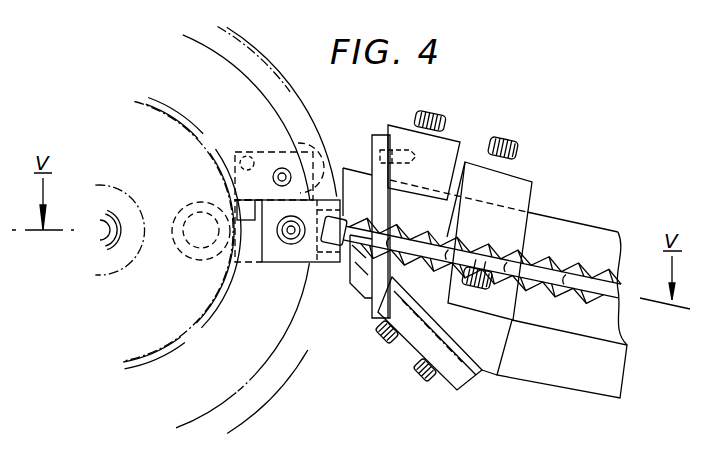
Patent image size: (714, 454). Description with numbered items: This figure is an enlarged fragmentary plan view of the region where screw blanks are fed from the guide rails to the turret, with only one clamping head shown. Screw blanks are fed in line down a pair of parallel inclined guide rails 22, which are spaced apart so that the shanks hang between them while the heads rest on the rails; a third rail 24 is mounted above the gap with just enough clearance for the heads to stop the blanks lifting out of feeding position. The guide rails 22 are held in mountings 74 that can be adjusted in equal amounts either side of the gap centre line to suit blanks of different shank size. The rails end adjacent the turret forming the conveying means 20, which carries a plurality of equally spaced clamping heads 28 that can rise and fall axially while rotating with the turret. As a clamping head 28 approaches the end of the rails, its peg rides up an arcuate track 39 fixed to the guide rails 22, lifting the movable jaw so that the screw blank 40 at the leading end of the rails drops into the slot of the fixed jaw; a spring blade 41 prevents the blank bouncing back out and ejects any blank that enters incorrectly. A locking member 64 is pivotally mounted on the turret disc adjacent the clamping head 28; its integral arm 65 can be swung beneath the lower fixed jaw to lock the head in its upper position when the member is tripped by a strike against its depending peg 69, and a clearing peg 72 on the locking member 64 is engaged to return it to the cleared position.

The conveying means 20 is at (265, 396).
The guide rails 22 is at (572, 230).
The third rail 24 is at (620, 284).
The clamping heads 28 is at (297, 272).
The arcuate track 39 is at (385, 205).
The screw blank 40 is at (546, 288).
The spring blade 41 is at (418, 333).
The locking member 64 is at (275, 151).
The arm 65 is at (222, 205).
The peg 69 is at (307, 147).
The clearing peg 72 is at (241, 156).
The mountings 74 is at (467, 150).